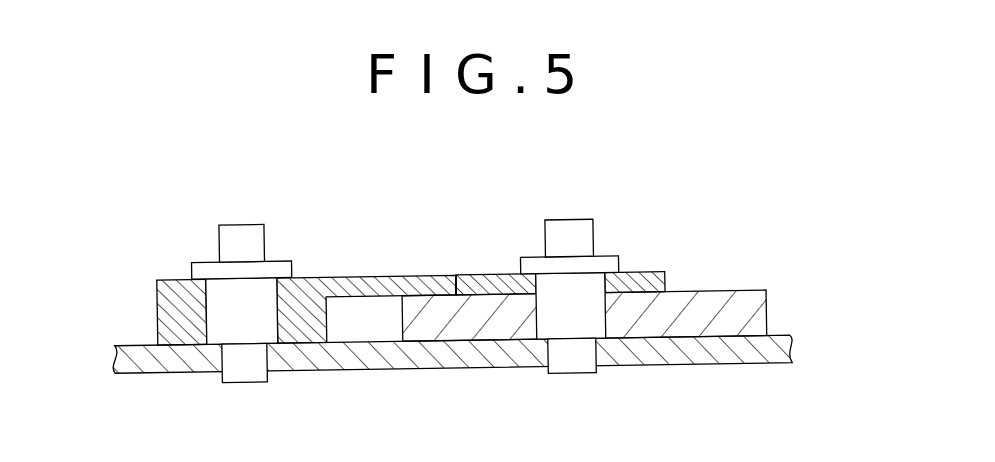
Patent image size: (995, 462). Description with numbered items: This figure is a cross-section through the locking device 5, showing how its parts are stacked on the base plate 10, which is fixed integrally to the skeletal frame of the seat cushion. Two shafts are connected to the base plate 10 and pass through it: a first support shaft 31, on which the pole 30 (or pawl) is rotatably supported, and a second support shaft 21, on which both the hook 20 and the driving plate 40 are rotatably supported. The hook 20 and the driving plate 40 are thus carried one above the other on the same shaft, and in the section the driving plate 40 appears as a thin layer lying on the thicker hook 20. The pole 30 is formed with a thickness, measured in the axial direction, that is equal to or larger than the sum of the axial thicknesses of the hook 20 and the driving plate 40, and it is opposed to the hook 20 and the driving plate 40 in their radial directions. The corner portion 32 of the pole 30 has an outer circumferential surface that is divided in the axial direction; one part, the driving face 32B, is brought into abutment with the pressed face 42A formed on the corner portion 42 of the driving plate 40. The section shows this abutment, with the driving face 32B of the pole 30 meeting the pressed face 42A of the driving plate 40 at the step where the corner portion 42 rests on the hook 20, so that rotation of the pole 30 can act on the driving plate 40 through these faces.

The locking device 5 is at (746, 195).
The base plate 10 is at (697, 358).
The hook 20 is at (730, 292).
The second support shaft 21 is at (576, 284).
The pole 30 is at (156, 307).
The first support shaft 31 is at (243, 297).
The corner portion 32 is at (364, 282).
The driving face 32B is at (458, 284).
The driving plate 40 is at (652, 272).
The corner portion 42 is at (477, 278).
The pressed face 42A is at (458, 284).